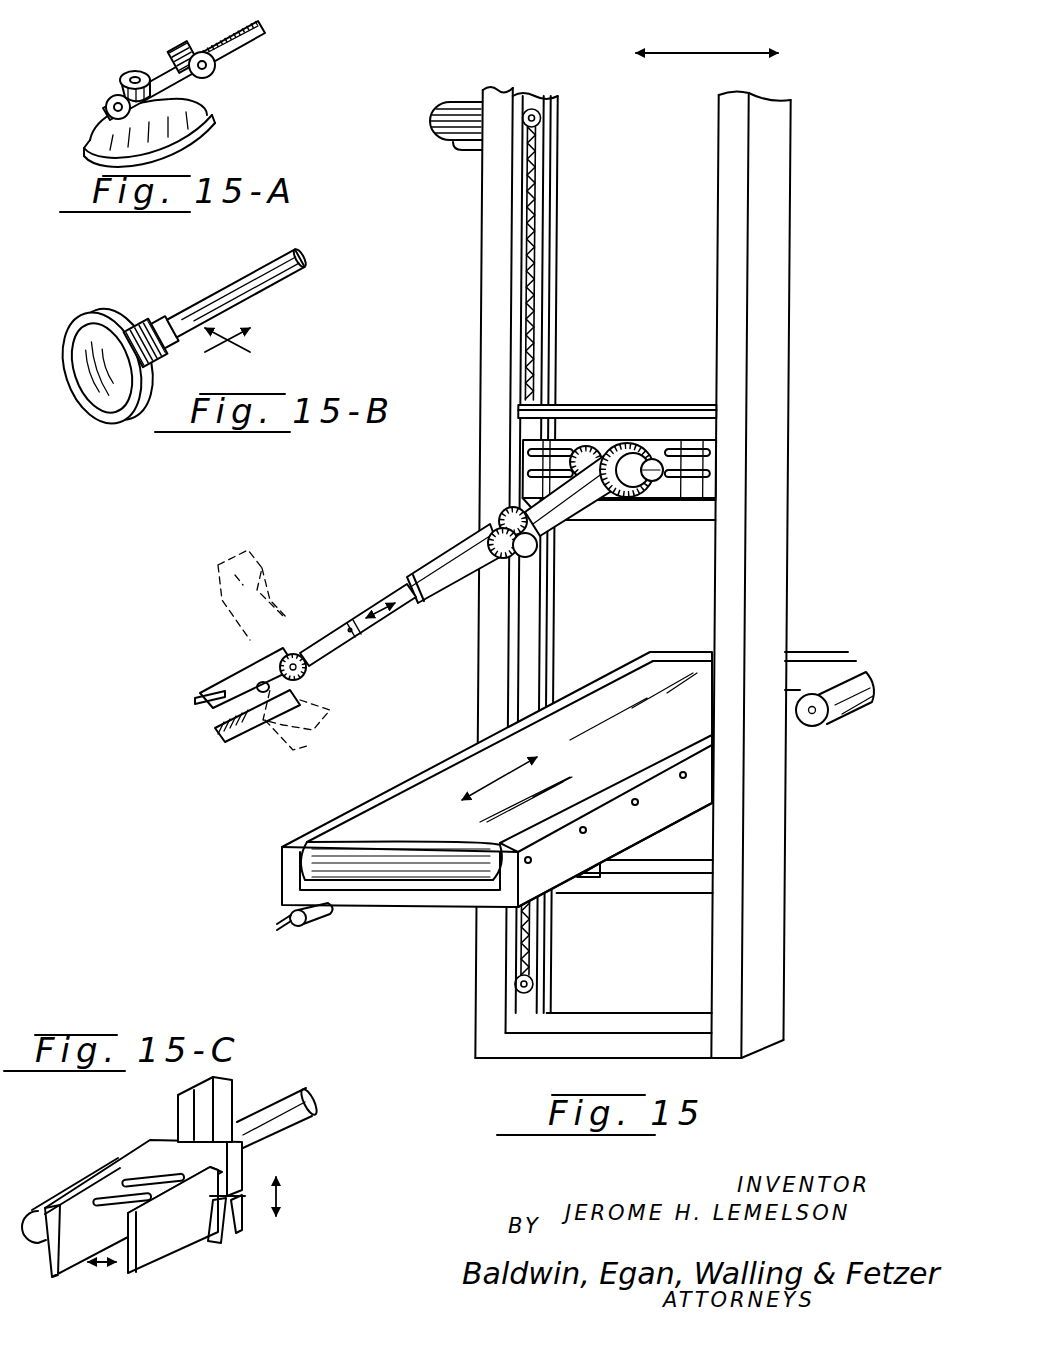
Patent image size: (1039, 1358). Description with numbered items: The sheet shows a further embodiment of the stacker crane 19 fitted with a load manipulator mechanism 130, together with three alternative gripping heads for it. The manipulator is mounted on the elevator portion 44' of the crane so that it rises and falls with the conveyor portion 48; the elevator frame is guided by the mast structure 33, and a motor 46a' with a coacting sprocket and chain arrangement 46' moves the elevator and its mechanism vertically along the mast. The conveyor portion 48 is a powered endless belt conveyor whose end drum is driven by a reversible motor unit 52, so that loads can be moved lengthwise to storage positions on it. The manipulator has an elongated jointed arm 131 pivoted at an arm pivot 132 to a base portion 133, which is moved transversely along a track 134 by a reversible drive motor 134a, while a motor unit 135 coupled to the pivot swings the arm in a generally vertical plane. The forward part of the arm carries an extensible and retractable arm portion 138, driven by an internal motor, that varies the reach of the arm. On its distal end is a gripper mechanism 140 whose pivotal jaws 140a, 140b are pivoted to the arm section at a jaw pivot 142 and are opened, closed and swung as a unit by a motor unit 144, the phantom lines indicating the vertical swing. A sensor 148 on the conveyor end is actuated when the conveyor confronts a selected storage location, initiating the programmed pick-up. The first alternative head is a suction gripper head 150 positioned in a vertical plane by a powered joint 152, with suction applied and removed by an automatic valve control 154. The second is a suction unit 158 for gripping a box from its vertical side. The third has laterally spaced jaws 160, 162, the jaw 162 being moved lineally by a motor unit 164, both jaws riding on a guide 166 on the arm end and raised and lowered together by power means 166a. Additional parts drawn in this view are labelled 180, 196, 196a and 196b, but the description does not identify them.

In FIG. 15, the stacker crane 19 is at (800, 183).
In FIG. 15, the mast structure 33 is at (770, 528).
In FIG. 15, the elevator portion 44' is at (632, 572).
In FIG. 15, the sprocket and chain arrangement 46' is at (567, 551).
In FIG. 15, the motor 46a' is at (464, 99).
In FIG. 15, the conveyor portion 48 is at (676, 650).
In FIG. 15, the motor unit 52 is at (855, 693).
In FIG. 15, the load manipulator mechanism 130 is at (428, 548).
In FIG. 15, the jointed arm 131 is at (598, 515).
In FIG. 15, the arm pivot 132 is at (590, 442).
In FIG. 15, the base portion 133 is at (638, 453).
In FIG. 15, the track 134 is at (680, 464).
In FIG. 15, the reversible drive motor 134a is at (702, 463).
In FIG. 15, the motor unit 135 is at (665, 445).
In FIG. 15, the extensible and retractable arm portion 138 is at (527, 548).
In FIG. 15B, the extensible and retractable arm portion 138 is at (277, 283).
In FIG. 15C, the extensible and retractable arm portion 138 is at (306, 1125).
In FIG. 15, the gripper mechanism 140 is at (196, 673).
In FIG. 15, the gripper jaw 140a is at (195, 699).
In FIG. 15, the gripper jaw 140b is at (218, 737).
In FIG. 15, the jaw pivot 142 is at (302, 669).
In FIG. 15, the motor unit 144 is at (300, 646).
In FIG. 15, the sensor 148 is at (318, 922).
In FIG. 15A, the suction gripper head 150 is at (222, 120).
In FIG. 15A, the powered joint 152 is at (216, 68).
In FIG. 15A, the automatic valve control 154 is at (141, 82).
In FIG. 15B, the suction unit 158 is at (138, 312).
In FIG. 15C, the jaw 160 is at (132, 1160).
In FIG. 15C, the jaw 162 is at (172, 1247).
In FIG. 15C, the motor unit 164 is at (58, 1205).
In FIG. 15C, the guide 166 is at (238, 1095).
In FIG. 15C, the power means 166a is at (250, 1233).
In FIG. 15B, the suction tool 180 is at (316, 252).
In FIG. 15, the arm joint 196 is at (509, 518).
In FIG. 15, the joint sleeve 196a is at (443, 602).
In FIG. 15, the joint coupling 196b is at (562, 520).